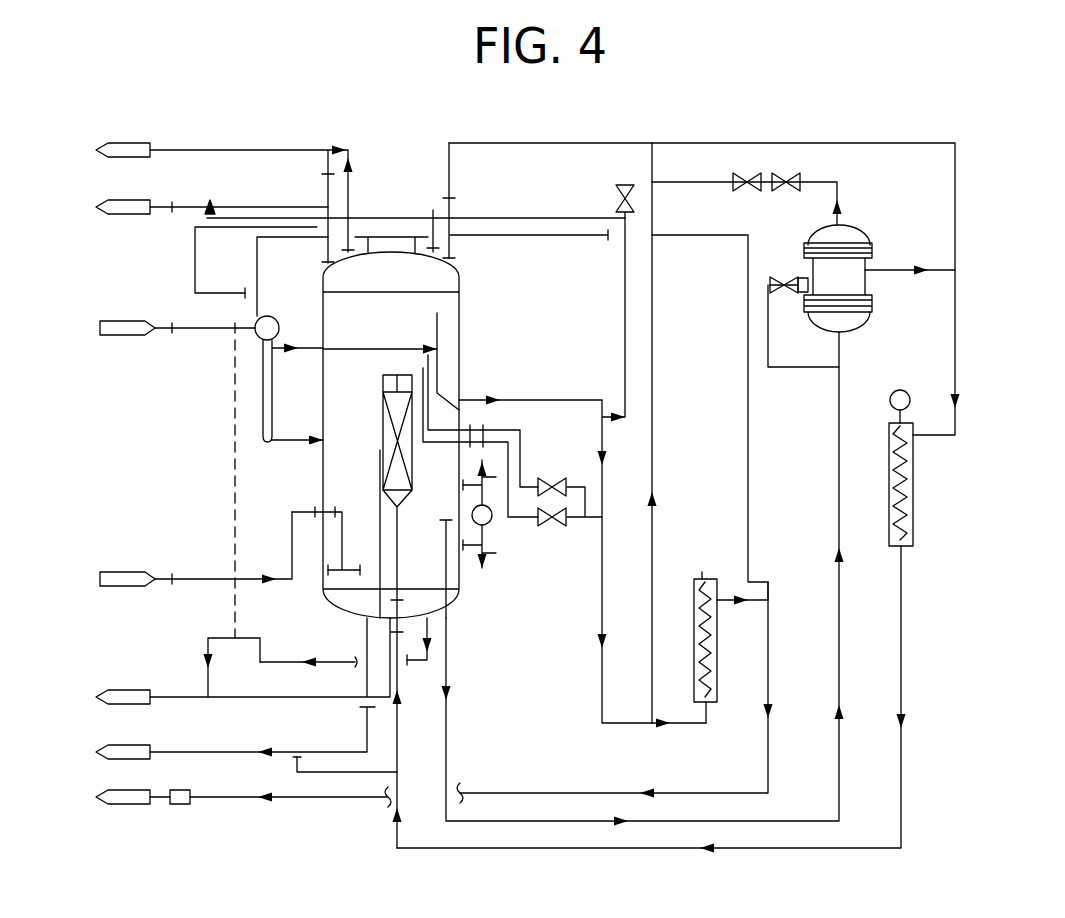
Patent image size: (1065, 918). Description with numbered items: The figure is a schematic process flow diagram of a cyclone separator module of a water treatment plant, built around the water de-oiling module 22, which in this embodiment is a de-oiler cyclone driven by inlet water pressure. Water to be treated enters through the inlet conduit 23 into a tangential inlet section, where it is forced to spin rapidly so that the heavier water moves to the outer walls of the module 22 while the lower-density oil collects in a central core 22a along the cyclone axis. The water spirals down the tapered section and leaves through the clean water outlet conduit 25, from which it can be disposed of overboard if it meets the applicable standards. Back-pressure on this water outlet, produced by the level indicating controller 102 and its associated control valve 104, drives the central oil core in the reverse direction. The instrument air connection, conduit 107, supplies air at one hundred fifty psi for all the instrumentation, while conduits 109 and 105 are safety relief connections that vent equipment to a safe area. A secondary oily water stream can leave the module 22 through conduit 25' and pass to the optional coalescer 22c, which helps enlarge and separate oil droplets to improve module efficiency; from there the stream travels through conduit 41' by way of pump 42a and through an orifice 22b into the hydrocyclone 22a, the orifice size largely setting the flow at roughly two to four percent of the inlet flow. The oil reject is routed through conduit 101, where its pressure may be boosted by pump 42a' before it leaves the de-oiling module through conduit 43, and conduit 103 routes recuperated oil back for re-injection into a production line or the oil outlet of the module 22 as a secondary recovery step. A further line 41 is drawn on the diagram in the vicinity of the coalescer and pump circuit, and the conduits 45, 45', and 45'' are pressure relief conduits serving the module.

The water de-oiling module 22 is at (462, 310).
The central core 22a is at (383, 435).
The orifice 22b is at (395, 493).
The coalescer 22c is at (855, 230).
The conduit 23 is at (188, 578).
The conduit 25 is at (264, 723).
The conduit 25' is at (643, 579).
The outlet line 41 is at (743, 289).
The conduit 41' is at (697, 725).
The pump 42a is at (953, 468).
The pump 42a' is at (717, 624).
The conduit 43 is at (232, 797).
The pressure relief conduit 45 is at (683, 433).
The pressure relief conduit 45' is at (646, 206).
The pressure relief conduit 45'' is at (710, 417).
The conduit 101 is at (555, 398).
The level indicating controller 102 is at (272, 315).
The conduit 103 is at (207, 749).
The control valve 104 is at (225, 631).
The conduit 105 is at (186, 207).
The conduit 107 is at (190, 325).
The conduit 109 is at (190, 150).